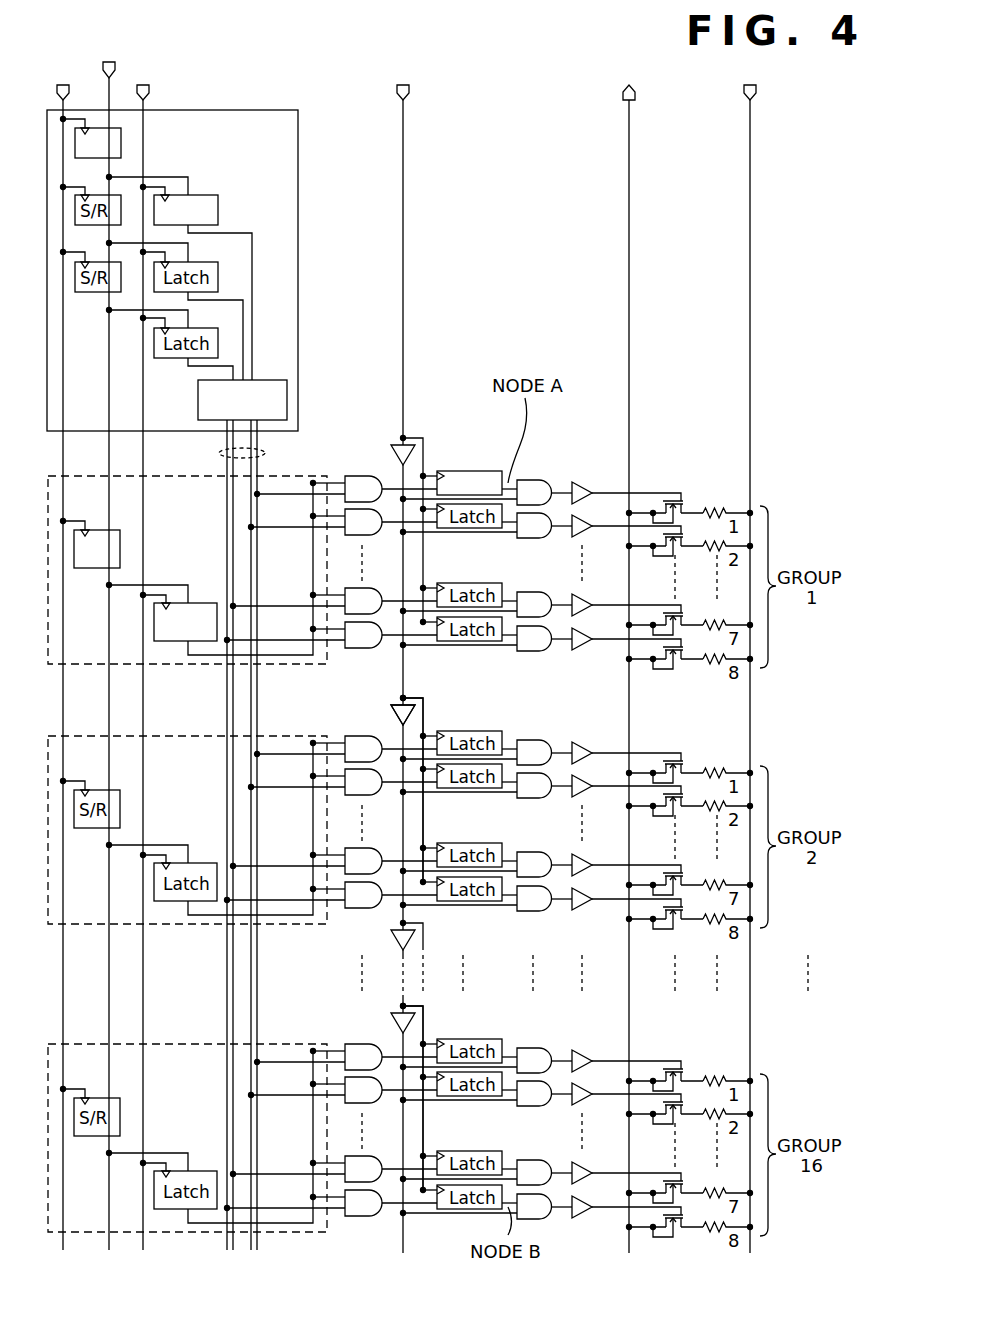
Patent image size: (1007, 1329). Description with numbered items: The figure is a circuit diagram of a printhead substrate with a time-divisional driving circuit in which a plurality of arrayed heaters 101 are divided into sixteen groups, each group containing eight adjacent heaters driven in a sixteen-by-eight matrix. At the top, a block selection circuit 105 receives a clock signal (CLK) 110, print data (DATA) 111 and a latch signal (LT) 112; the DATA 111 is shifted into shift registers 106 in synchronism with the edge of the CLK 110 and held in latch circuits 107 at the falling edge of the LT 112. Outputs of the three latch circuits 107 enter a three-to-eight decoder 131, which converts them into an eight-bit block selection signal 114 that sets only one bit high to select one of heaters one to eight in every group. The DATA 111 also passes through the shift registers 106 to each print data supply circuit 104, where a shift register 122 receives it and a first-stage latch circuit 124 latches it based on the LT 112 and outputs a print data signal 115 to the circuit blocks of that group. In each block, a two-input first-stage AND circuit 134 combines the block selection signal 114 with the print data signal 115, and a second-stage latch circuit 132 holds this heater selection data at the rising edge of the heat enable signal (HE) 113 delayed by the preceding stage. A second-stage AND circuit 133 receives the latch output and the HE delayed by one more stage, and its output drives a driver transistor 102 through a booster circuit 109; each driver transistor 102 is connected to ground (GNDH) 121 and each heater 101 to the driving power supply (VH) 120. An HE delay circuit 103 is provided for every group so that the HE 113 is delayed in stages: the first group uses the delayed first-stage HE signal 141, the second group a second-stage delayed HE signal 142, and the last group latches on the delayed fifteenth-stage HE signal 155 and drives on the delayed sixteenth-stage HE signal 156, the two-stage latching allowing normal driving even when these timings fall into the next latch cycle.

The clock signal (CLK) 110 is at (63, 60).
The print data (DATA) 111 is at (109, 38).
The latch signal (LT) 112 is at (143, 60).
The heat enable signal (HE) 113 is at (407, 93).
The driving power supply (VH) 120 is at (745, 93).
The ground (GNDH) 121 is at (624, 93).
The block selection circuit 105 is at (260, 110).
The shift register 106 is at (120, 154).
The latch circuit 107 is at (210, 195).
The decoder 131 is at (287, 382).
The block selection signal 114 is at (265, 452).
The print data supply circuit 104 is at (176, 474).
The shift register 122 is at (88, 568).
The latch circuit 124 is at (168, 643).
The first-stage AND circuit 134 is at (345, 477).
The second-stage latch circuit 132 is at (463, 470).
The second-stage AND circuit 133 is at (531, 480).
The booster circuit 109 is at (581, 482).
The driver transistor 102 is at (680, 500).
The heater 101 is at (708, 511).
The HE delay circuit 103 is at (405, 440).
The delayed first-stage HE signal 141 is at (405, 560).
The heat enable signal line 142 is at (405, 820).
The delayed 15th-stage HE signal 155 is at (424, 1007).
The delayed 16th-stage HE signal 156 is at (405, 1131).
The print data signal 115 is at (312, 560).